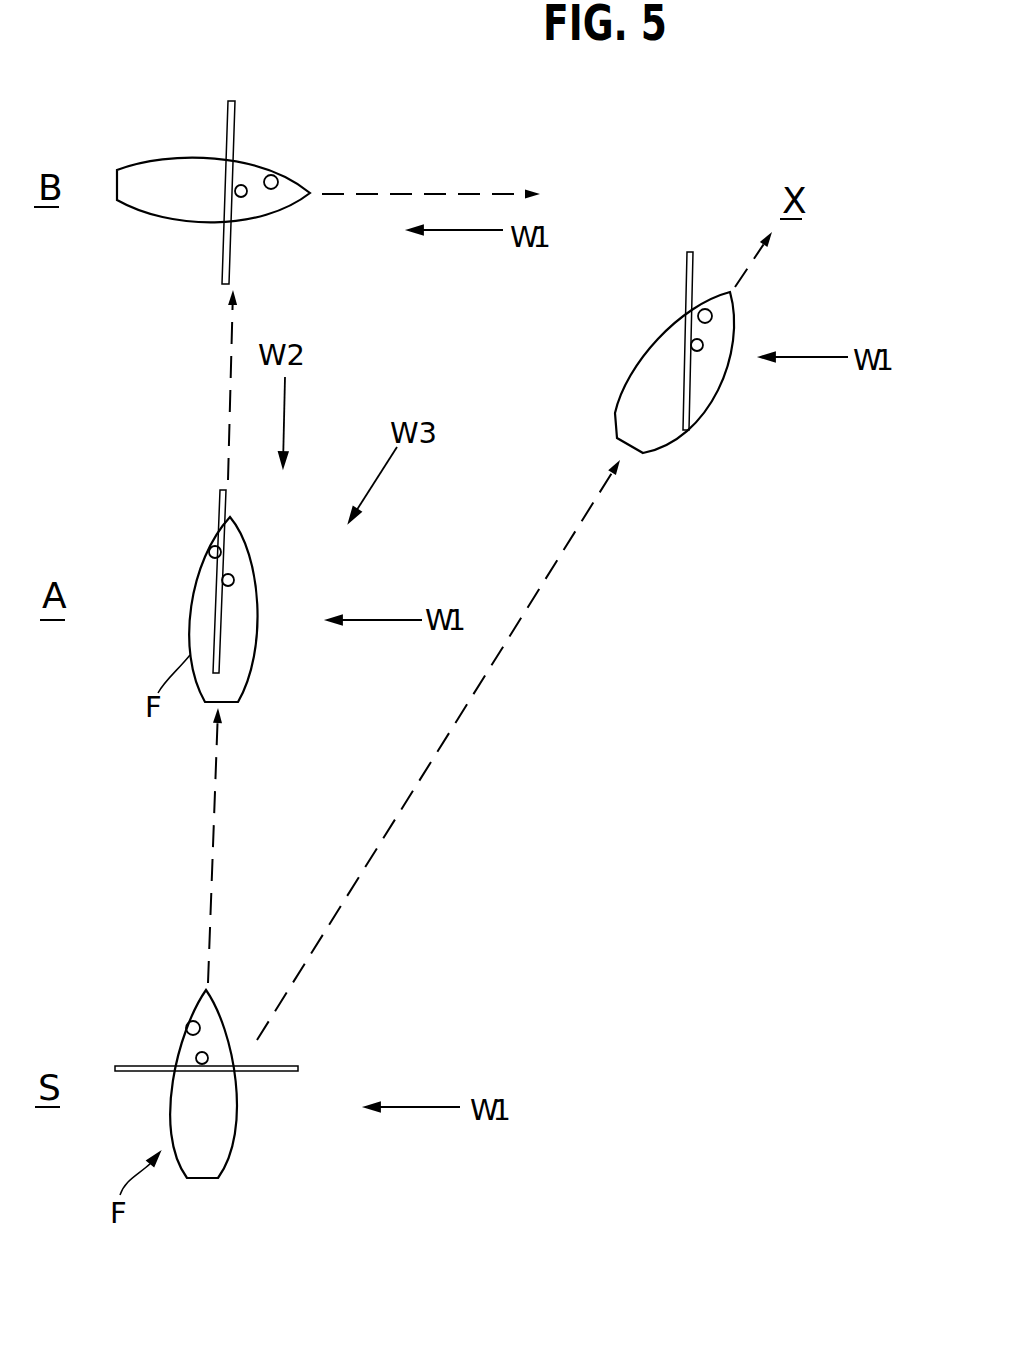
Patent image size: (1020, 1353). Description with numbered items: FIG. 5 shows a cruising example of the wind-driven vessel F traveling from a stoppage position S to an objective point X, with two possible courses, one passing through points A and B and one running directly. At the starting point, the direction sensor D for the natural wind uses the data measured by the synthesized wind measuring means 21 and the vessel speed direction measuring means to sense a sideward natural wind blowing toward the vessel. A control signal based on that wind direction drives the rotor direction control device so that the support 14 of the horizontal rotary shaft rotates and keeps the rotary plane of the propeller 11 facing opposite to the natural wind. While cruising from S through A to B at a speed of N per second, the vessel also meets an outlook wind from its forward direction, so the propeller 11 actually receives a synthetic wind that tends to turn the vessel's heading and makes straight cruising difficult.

The sail board 11 is at (227, 128).
The mast pivot 14 is at (244, 197).
The mounting point 21 is at (276, 177).